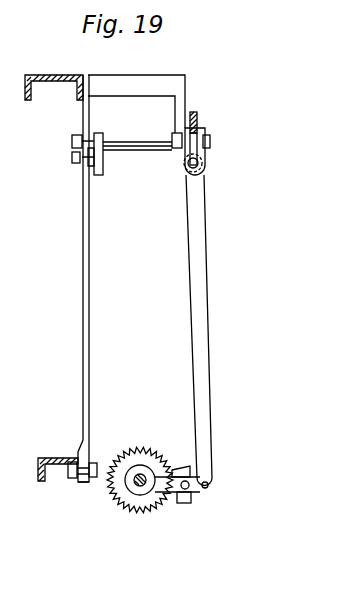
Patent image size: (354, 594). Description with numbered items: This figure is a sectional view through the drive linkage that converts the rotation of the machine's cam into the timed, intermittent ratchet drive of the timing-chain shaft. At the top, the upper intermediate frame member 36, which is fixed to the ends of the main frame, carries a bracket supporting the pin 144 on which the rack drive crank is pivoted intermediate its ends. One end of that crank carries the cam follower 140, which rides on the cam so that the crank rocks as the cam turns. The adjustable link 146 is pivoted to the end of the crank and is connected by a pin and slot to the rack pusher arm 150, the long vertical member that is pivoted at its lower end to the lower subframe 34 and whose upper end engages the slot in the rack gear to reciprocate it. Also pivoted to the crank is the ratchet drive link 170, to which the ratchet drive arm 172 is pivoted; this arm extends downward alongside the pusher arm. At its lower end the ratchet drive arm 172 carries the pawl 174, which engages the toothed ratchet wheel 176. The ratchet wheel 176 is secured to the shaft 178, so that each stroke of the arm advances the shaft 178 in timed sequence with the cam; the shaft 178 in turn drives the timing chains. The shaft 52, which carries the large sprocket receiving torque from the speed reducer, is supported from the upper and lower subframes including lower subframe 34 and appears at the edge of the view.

The upper intermediate frame member 36 is at (25, 102).
The pin 144 is at (127, 141).
The cam follower 140 is at (200, 122).
The ratchet drive link 170 is at (202, 157).
The adjustable link 146 is at (89, 171).
The rack pusher arm 150 is at (88, 315).
The ratchet drive arm 172 is at (202, 278).
The lower subframe 34 is at (53, 457).
The shaft 178 is at (139, 473).
The ratchet wheel 176 is at (138, 498).
The pawl 174 is at (190, 503).
The shaft 52 is at (7, 268).